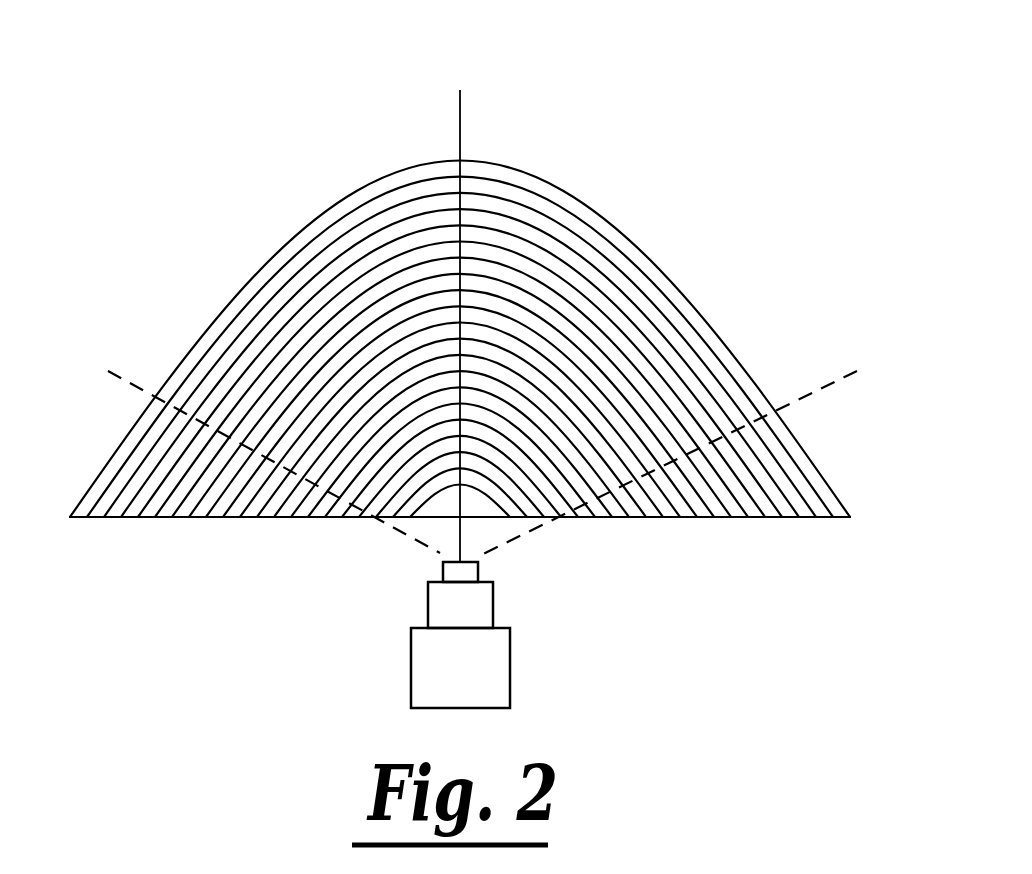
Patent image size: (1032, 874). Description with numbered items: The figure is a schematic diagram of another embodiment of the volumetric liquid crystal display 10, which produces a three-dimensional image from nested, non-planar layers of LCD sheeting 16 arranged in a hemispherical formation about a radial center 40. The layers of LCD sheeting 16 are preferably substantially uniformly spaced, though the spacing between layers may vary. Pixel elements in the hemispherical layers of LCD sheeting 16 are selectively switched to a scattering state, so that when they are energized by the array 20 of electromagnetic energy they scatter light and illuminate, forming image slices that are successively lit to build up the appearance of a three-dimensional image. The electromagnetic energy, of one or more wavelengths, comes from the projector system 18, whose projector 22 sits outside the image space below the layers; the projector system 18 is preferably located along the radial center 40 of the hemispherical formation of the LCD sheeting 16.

The volumetric liquid crystal display 10 is at (766, 172).
The layers of LCD sheeting 16 is at (328, 212).
The projector system 18 is at (587, 650).
The array of electromagnetic energy 20 is at (162, 372).
The projector 22 is at (411, 662).
The radial center 40 is at (461, 122).